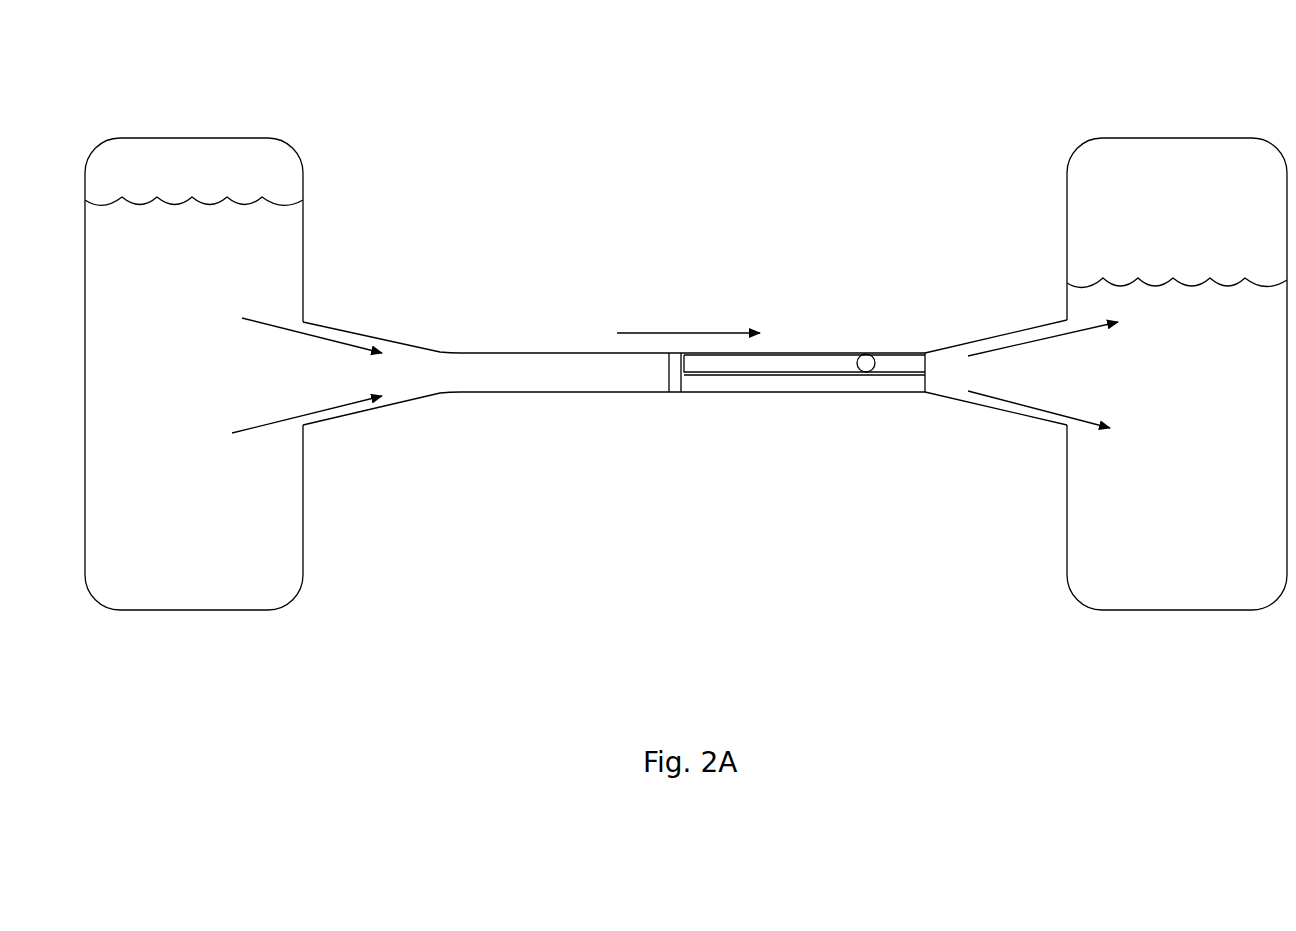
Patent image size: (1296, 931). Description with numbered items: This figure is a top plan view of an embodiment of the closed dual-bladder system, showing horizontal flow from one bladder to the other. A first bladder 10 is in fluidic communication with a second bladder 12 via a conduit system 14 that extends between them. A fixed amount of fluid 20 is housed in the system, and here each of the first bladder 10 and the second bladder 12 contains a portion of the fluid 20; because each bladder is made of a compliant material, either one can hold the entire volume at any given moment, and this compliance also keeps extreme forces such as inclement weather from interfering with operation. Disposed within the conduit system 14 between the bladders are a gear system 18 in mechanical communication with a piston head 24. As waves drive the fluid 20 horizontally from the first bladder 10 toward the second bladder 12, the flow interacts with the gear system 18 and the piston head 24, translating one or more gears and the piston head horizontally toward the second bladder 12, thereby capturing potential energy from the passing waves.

The first bladder 10 is at (180, 138).
The second bladder 12 is at (1167, 138).
The conduit system 14 is at (538, 345).
The gear system 18 is at (872, 371).
The fluid 20 is at (183, 528).
The piston head 24 is at (675, 393).